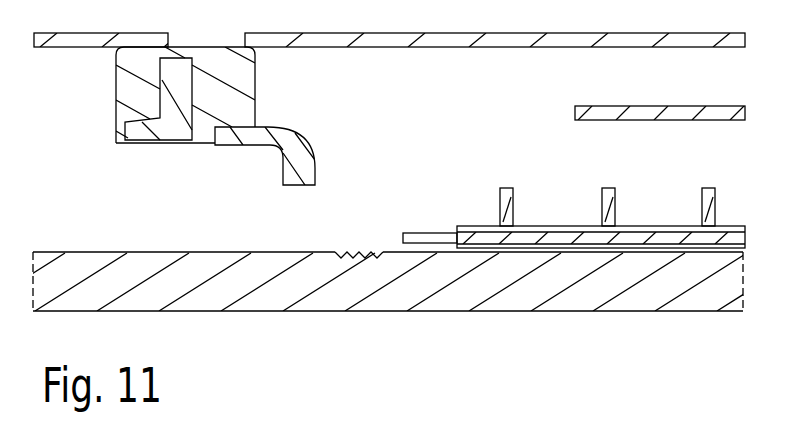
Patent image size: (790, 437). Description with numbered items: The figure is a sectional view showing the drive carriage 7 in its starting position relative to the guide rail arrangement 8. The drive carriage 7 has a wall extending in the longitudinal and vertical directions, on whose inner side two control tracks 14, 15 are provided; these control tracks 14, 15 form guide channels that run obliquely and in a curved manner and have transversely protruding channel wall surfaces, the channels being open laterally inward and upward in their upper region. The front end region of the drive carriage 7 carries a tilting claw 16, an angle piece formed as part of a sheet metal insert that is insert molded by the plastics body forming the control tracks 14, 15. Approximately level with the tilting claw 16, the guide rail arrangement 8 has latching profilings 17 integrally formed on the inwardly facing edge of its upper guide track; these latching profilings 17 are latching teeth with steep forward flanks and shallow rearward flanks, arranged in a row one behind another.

The drive carriage 7 is at (575, 226).
The guide rail arrangement 8 is at (509, 300).
The control track 14 is at (702, 207).
The control track 15 is at (513, 212).
The tilting claw 16 is at (440, 240).
The latching profilings 17 is at (362, 252).